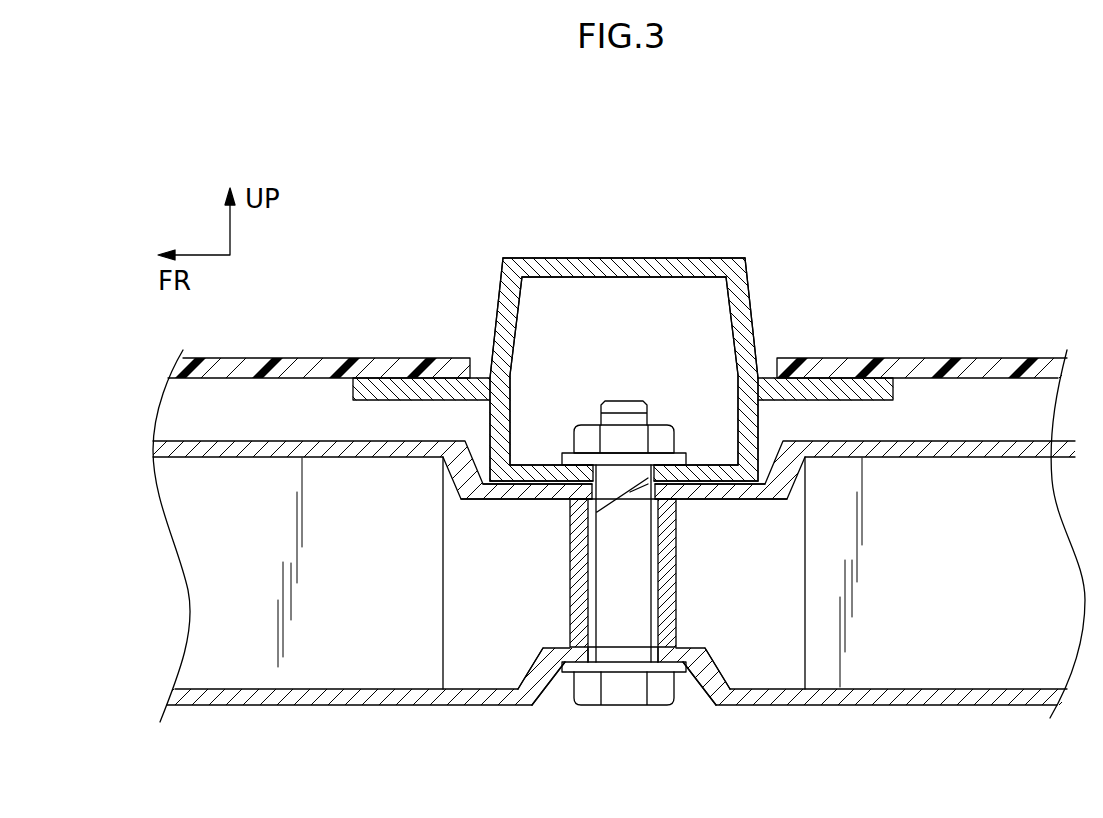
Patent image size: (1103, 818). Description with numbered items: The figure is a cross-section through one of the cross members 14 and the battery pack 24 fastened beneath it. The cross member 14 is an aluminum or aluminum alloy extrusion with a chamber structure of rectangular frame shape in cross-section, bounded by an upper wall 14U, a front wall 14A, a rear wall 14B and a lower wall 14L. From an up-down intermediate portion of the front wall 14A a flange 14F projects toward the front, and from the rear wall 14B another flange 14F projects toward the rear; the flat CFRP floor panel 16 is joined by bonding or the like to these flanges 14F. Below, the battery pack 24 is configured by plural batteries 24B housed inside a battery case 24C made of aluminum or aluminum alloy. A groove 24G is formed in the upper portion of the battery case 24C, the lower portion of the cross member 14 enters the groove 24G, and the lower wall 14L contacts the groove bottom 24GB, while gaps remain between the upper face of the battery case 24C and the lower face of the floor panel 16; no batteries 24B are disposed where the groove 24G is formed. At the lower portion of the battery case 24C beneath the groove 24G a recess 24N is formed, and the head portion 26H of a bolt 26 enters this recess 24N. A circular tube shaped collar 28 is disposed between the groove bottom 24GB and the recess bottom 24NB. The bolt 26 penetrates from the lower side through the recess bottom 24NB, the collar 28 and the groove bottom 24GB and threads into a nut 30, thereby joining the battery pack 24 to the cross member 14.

The cross member 14 is at (652, 316).
The upper wall 14U is at (635, 257).
The front wall 14A is at (520, 308).
The rear wall 14B is at (728, 319).
The lower wall 14L is at (537, 470).
The flange 14F is at (377, 401).
The floor panel 16 is at (320, 357).
The battery pack 24 is at (597, 603).
The groove 24G is at (597, 492).
The groove bottom 24GB is at (710, 500).
The battery 24B is at (418, 553).
The battery case 24C is at (418, 705).
The recess 24N is at (596, 673).
The recess bottom 24NB is at (565, 647).
The bolt 26 is at (622, 597).
The head portion 26H is at (630, 705).
The collar 28 is at (570, 535).
The nut 30 is at (667, 421).